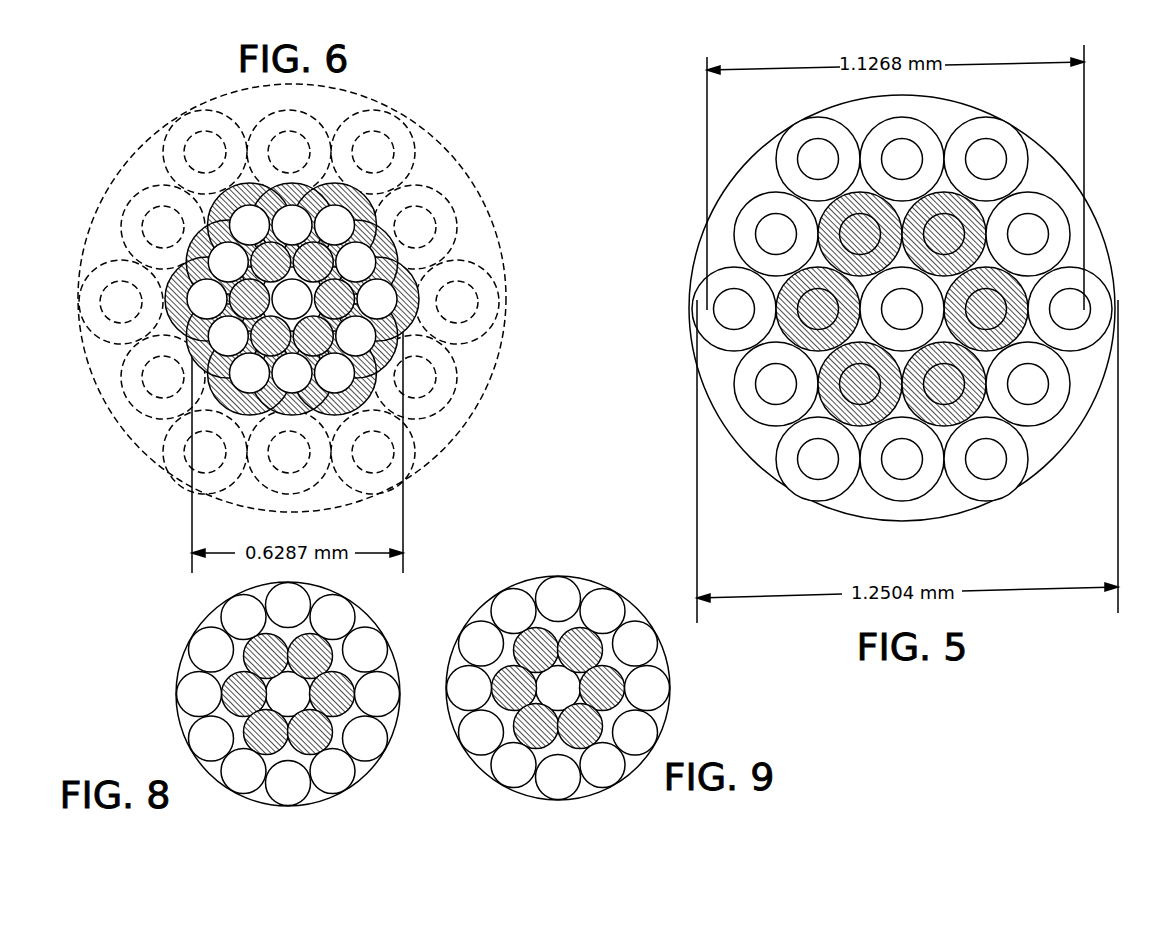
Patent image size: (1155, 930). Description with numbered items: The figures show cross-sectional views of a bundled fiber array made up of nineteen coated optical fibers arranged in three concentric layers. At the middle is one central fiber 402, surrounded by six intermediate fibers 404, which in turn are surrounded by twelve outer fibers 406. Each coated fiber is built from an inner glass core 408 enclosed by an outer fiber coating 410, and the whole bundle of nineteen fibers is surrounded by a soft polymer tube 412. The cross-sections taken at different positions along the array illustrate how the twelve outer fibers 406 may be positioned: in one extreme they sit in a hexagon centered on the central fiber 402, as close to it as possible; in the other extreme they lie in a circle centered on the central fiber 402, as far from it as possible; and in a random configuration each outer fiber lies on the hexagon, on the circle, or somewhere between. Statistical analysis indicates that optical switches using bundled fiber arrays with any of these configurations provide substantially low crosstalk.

In FIG. 6, the central fiber 402 is at (290, 297).
In FIG. 5, the central fiber 402 is at (908, 312).
In FIG. 6, the intermediate fibers 404 is at (342, 294).
In FIG. 5, the intermediate fibers 404 is at (857, 388).
In FIG. 6, the outer fibers 406 is at (387, 300).
In FIG. 5, the outer fibers 406 is at (776, 388).
In FIG. 5, the inner glass core 408 is at (992, 458).
In FIG. 5, the outer fiber coating 410 is at (1015, 437).
In FIG. 6, the soft polymer tube 412 is at (208, 215).
In FIG. 5, the soft polymer tube 412 is at (759, 142).